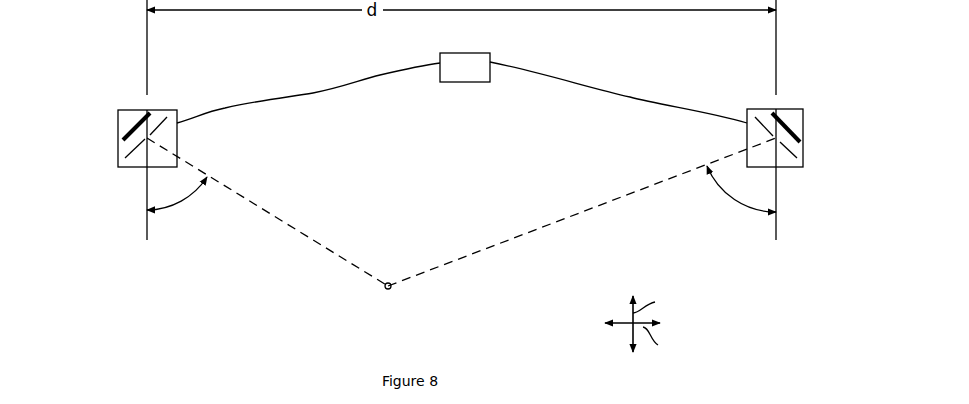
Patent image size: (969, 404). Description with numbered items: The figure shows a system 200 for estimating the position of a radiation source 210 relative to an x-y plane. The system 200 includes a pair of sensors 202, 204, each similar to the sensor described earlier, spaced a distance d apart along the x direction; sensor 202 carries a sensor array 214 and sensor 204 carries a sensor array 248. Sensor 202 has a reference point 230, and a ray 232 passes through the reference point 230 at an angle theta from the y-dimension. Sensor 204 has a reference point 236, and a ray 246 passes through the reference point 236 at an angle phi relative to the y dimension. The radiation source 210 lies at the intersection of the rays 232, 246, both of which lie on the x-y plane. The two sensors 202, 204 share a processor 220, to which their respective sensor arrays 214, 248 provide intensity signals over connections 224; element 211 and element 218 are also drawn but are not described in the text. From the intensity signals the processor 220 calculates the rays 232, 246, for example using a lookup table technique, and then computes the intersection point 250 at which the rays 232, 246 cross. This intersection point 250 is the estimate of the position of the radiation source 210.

The system 200 is at (188, 267).
The sensor 202 is at (803, 126).
The sensor 204 is at (133, 110).
The radiation source 210 is at (385, 290).
The scene 211 is at (516, 291).
The sensor array 214 is at (782, 113).
The beam splitter 218 is at (125, 158).
The processor 220 is at (451, 76).
The cable 224 is at (775, 138).
The reference point 230 is at (618, 92).
The ray 232 is at (552, 223).
The reference point 236 is at (147, 138).
The ray 246 is at (282, 222).
The sensor array 248 is at (123, 139).
The intersection point 250 is at (388, 283).